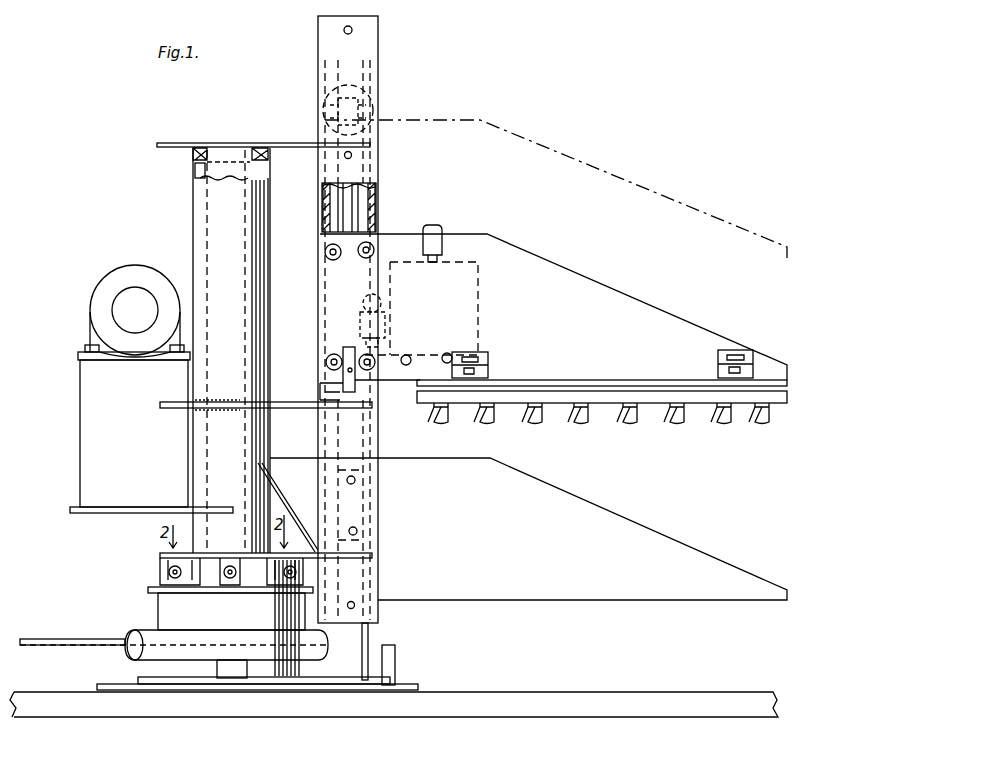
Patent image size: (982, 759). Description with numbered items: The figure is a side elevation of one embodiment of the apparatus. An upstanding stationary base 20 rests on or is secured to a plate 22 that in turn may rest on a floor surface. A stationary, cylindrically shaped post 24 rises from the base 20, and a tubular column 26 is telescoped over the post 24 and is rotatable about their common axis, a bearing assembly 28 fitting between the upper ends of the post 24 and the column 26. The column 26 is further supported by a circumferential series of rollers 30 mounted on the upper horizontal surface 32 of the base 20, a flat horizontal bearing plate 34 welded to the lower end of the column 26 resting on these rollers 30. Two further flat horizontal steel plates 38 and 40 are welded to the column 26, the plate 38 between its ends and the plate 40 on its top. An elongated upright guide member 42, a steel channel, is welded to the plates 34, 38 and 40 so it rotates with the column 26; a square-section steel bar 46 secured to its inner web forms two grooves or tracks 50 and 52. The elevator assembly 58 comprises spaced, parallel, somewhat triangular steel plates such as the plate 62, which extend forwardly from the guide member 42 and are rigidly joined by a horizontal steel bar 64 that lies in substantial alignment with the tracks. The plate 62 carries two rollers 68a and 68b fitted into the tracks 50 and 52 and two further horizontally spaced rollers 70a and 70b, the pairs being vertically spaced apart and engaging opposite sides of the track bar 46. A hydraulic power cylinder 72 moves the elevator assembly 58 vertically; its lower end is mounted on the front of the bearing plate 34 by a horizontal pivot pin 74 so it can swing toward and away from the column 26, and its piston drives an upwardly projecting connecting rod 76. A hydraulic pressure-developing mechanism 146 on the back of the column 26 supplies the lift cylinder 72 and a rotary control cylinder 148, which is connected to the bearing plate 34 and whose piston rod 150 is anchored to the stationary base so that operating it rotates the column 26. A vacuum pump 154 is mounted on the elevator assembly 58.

The stationary base 20 is at (158, 600).
The plate 22 is at (108, 683).
The post 24 is at (194, 172).
The column 26 is at (193, 213).
The bearing assembly 28 is at (190, 155).
The rollers 30 is at (160, 562).
The upper horizontal surface 32 is at (148, 590).
The bearing plate 34 is at (172, 550).
The plate 38 is at (302, 410).
The plate 40 is at (282, 142).
The guide member 42 is at (396, 600).
The steel bar 46 is at (342, 335).
The track 50 is at (336, 198).
The track 52 is at (360, 203).
The elevator assembly 58 is at (597, 265).
The steel plate 62 is at (655, 306).
The horizontal steel bar 64 is at (385, 321).
The roller 68a is at (325, 252).
The roller 68b is at (370, 243).
The roller 70a is at (328, 362).
The roller 70b is at (372, 370).
The hydraulic power cylinder 72 is at (364, 466).
The pivot pin 74 is at (362, 536).
The connecting rod 76 is at (323, 186).
The hydraulic pressure-developing mechanism 146 is at (88, 406).
The rotary control cylinder 148 is at (285, 675).
The piston rod 150 is at (62, 638).
The vacuum pump 154 is at (490, 304).